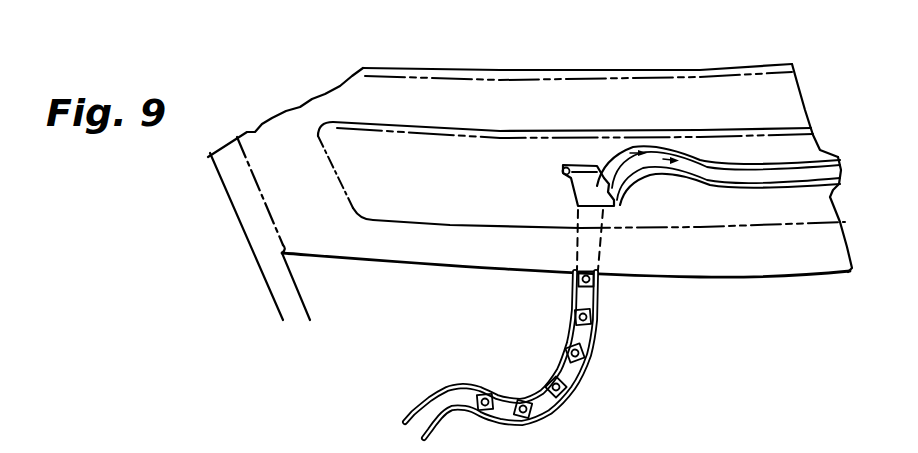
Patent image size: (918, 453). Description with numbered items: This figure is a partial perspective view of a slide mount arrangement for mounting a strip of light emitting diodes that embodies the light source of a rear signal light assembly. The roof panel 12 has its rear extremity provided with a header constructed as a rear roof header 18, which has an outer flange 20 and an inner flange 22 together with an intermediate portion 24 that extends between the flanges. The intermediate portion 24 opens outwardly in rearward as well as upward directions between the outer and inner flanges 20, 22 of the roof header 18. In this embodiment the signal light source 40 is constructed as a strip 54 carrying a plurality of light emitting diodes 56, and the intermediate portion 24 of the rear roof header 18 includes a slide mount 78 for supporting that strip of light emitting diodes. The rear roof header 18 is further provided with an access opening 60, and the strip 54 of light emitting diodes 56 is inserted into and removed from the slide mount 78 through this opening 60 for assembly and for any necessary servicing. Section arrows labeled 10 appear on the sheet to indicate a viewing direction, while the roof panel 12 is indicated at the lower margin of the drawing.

The section line 10 is at (648, 50).
The roof panel 12 is at (122, 450).
The rear roof header 18 is at (475, 285).
The outer flange 20 is at (664, 262).
The inner flange 22 is at (516, 96).
The intermediate portion 24 is at (448, 210).
The light source 40 is at (532, 355).
The strip 54 is at (594, 357).
The light emitting diodes 56 is at (568, 324).
The access opening 60 is at (562, 177).
The slide mount 78 is at (742, 160).